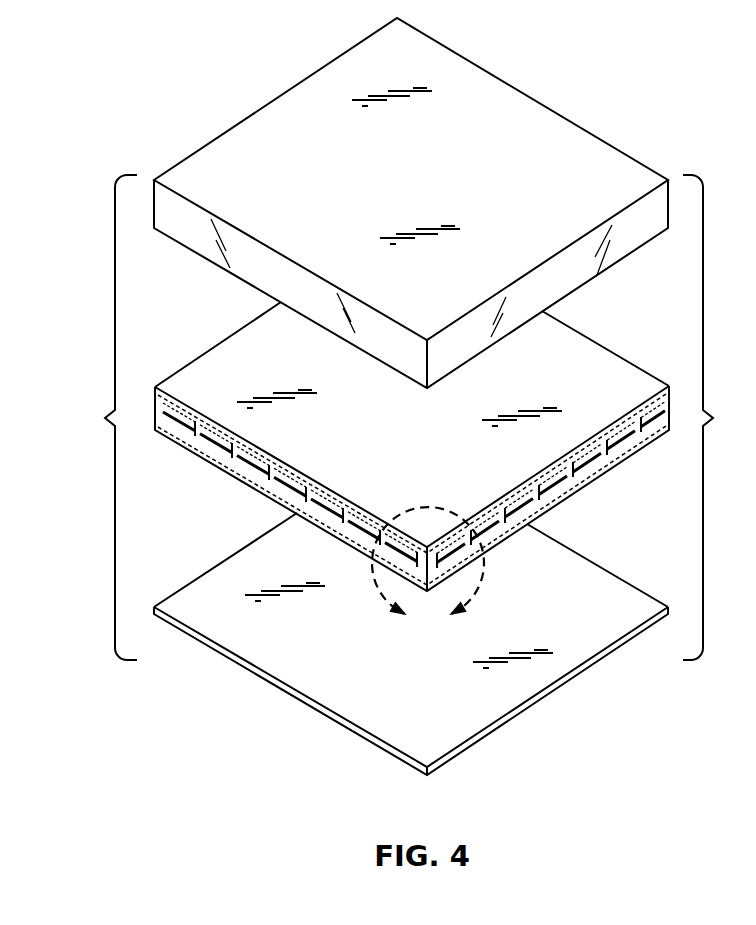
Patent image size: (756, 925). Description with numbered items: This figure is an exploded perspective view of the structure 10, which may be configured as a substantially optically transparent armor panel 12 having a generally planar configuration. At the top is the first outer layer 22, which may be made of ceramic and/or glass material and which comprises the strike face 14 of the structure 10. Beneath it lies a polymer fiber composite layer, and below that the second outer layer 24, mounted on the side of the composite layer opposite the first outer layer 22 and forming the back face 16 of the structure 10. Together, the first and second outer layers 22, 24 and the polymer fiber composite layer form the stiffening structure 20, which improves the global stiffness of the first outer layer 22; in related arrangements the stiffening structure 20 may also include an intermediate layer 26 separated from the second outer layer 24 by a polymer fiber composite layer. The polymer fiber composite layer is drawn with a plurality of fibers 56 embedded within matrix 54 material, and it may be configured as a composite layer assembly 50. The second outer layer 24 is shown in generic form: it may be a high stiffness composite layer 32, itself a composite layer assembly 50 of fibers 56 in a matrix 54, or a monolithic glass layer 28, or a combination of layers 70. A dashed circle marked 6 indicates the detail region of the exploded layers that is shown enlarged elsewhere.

The structure 10 is at (88, 417).
The optically transparent armor panel 12 is at (88, 417).
The strike face 14 is at (411, 203).
The back face 16 is at (290, 697).
The stiffening structure 20 is at (443, 500).
The first outer layer 22 is at (636, 231).
The second outer layer 24 is at (411, 654).
The intermediate layer 26 is at (622, 377).
The glass layer 28 is at (497, 732).
The high stiffness composite layer 32 is at (372, 745).
The composite layer assembly 50 is at (230, 477).
The matrix 54 is at (182, 444).
The fibers 56 is at (647, 432).
The detail region of FIG. 6 is at (428, 569).
The layers 70 is at (719, 417).